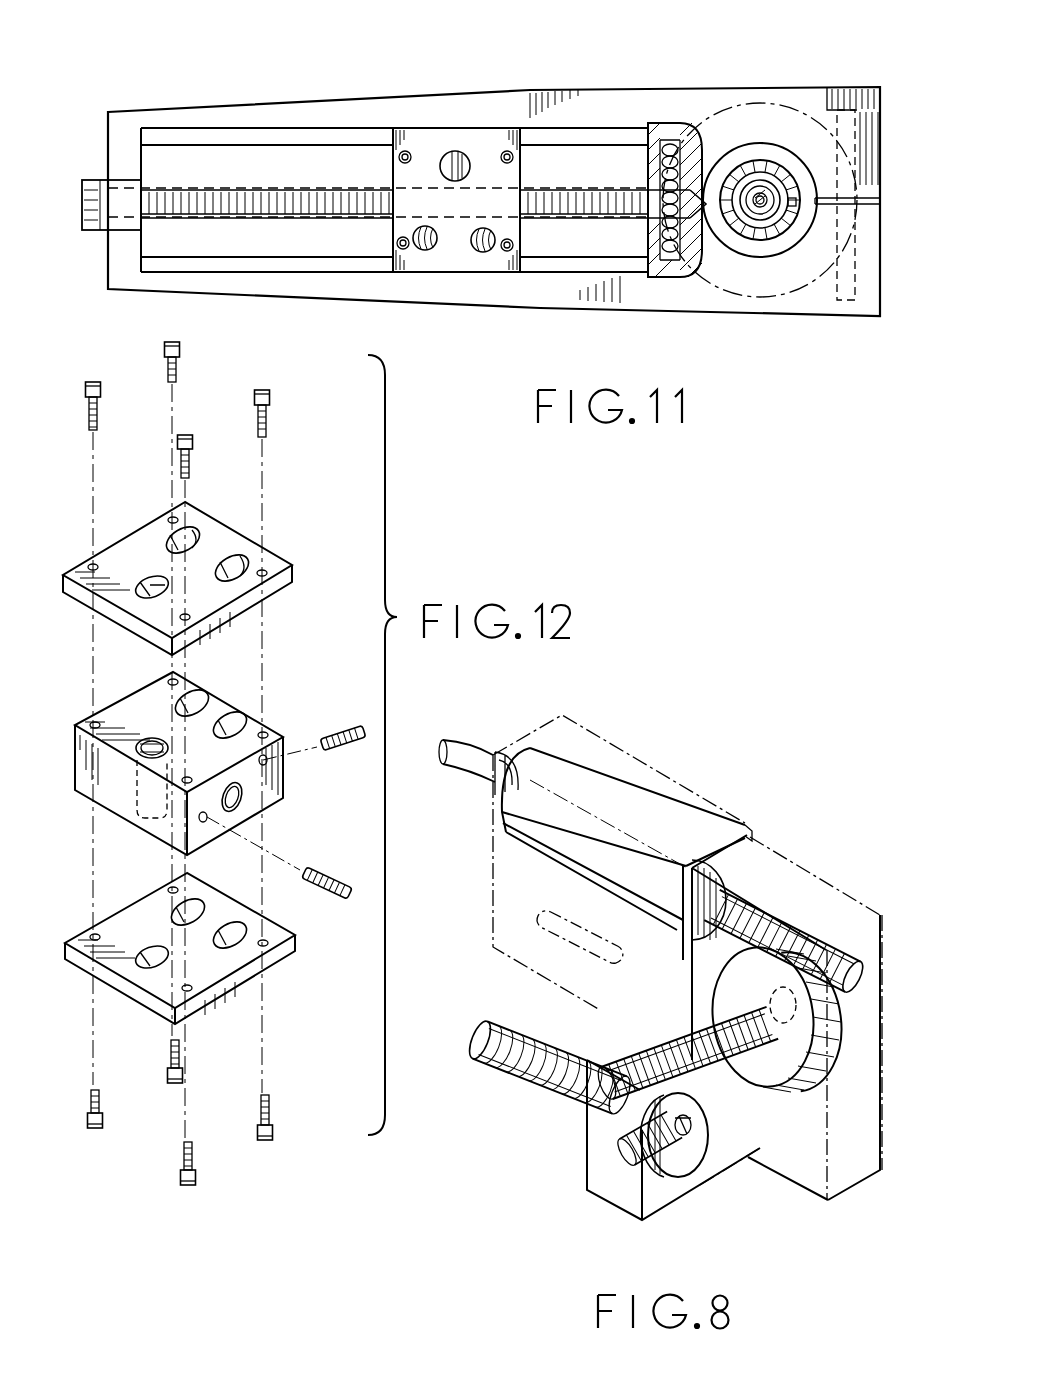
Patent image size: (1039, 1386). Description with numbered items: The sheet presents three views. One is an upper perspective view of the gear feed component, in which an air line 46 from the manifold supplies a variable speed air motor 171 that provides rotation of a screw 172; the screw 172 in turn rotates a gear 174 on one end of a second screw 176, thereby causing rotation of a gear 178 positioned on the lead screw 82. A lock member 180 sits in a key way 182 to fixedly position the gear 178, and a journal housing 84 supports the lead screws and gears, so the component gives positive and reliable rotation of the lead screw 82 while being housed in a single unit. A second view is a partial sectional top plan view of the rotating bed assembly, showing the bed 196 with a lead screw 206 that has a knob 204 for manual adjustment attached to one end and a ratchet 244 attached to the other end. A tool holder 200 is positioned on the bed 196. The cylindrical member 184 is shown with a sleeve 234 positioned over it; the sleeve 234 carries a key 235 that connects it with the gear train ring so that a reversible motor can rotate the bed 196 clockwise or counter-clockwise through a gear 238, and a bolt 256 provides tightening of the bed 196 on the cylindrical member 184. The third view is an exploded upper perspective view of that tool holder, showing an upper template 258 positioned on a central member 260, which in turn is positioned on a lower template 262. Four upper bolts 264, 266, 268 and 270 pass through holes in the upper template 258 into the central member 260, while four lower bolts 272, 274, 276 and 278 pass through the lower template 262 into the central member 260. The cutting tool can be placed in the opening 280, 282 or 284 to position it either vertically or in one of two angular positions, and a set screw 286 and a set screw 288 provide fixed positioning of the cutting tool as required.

In FIG. 11, the bed 196 is at (291, 96).
In FIG. 11, the knob 204 is at (92, 182).
In FIG. 11, the lead screw 206 is at (183, 190).
In FIG. 11, the tool holder 200 is at (423, 142).
In FIG. 12, the tool holder 200 is at (103, 1180).
In FIG. 11, the ratchet 244 is at (662, 150).
In FIG. 11, the sleeve 234 is at (742, 160).
In FIG. 11, the cylindrical member 184 is at (764, 185).
In FIG. 11, the bolt 256 is at (850, 140).
In FIG. 11, the gear 238 is at (757, 243).
In FIG. 11, the key 235 is at (793, 208).
In FIG. 12, the upper bolt 264 is at (88, 383).
In FIG. 12, the upper bolt 266 is at (165, 345).
In FIG. 12, the upper bolt 268 is at (268, 392).
In FIG. 12, the upper bolt 270 is at (188, 437).
In FIG. 12, the upper template 258 is at (151, 568).
In FIG. 12, the central member 260 is at (103, 778).
In FIG. 12, the lower template 262 is at (90, 968).
In FIG. 12, the lower bolt 272 is at (88, 1120).
In FIG. 12, the lower bolt 274 is at (172, 1082).
In FIG. 12, the lower bolt 276 is at (262, 1140).
In FIG. 12, the lower bolt 278 is at (183, 1185).
In FIG. 12, the opening 280 is at (135, 590).
In FIG. 12, the opening 282 is at (172, 535).
In FIG. 12, the opening 284 is at (230, 562).
In FIG. 12, the set screw 286 is at (345, 730).
In FIG. 12, the set screw 288 is at (335, 875).
In FIG. 8, the air line 46 is at (485, 748).
In FIG. 8, the variable speed air motor 171 is at (627, 790).
In FIG. 8, the screw 172 is at (780, 915).
In FIG. 8, the gear 174 is at (837, 1057).
In FIG. 8, the screw 176 is at (683, 1042).
In FIG. 8, the lead screw 82 is at (502, 1070).
In FIG. 8, the journal housing 84 is at (578, 1155).
In FIG. 8, the gear 178 is at (625, 1160).
In FIG. 8, the lock member 180 is at (687, 1113).
In FIG. 8, the key way 182 is at (690, 1128).